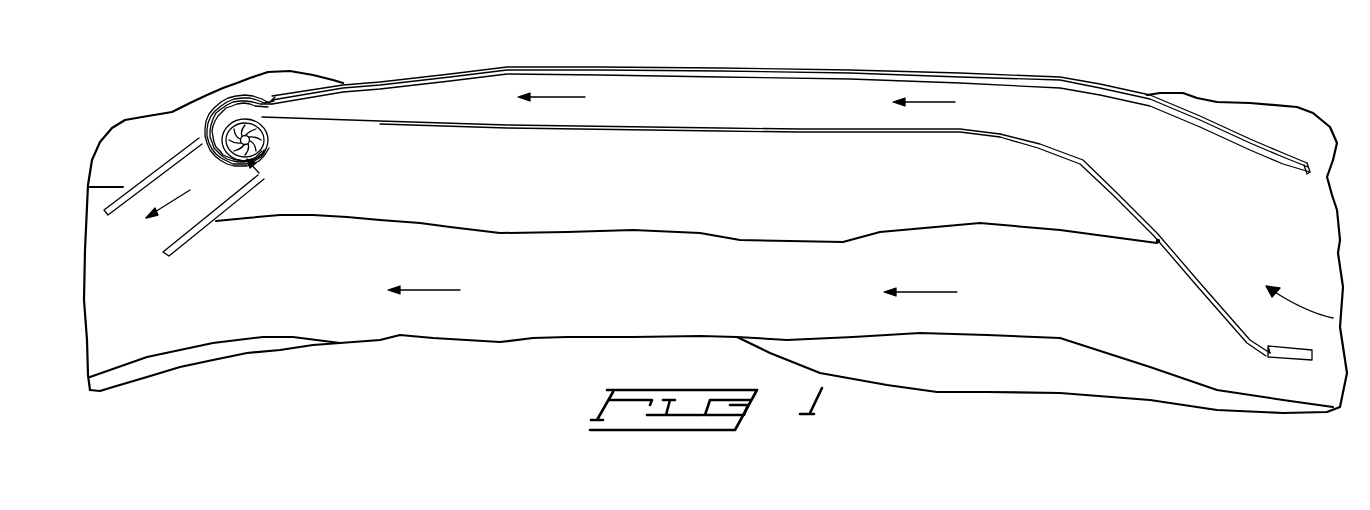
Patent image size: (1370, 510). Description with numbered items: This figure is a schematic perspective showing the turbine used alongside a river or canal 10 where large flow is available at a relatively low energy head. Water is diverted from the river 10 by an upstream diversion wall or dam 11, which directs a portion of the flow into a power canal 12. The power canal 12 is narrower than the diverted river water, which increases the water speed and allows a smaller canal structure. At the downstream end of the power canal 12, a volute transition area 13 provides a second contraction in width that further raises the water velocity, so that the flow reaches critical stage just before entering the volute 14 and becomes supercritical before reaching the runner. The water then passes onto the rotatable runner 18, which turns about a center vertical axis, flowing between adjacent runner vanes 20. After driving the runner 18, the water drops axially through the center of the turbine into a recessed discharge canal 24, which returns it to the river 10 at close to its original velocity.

The river or canal 10 is at (719, 300).
The upstream diversion wall or dam 11 is at (1212, 298).
The power canal 12 is at (791, 120).
The volute transition area 13 is at (631, 115).
The volute 14 is at (236, 97).
The rotatable runner 18 is at (271, 148).
The runner vanes 20 is at (266, 173).
The recessed discharge canal 24 is at (159, 178).